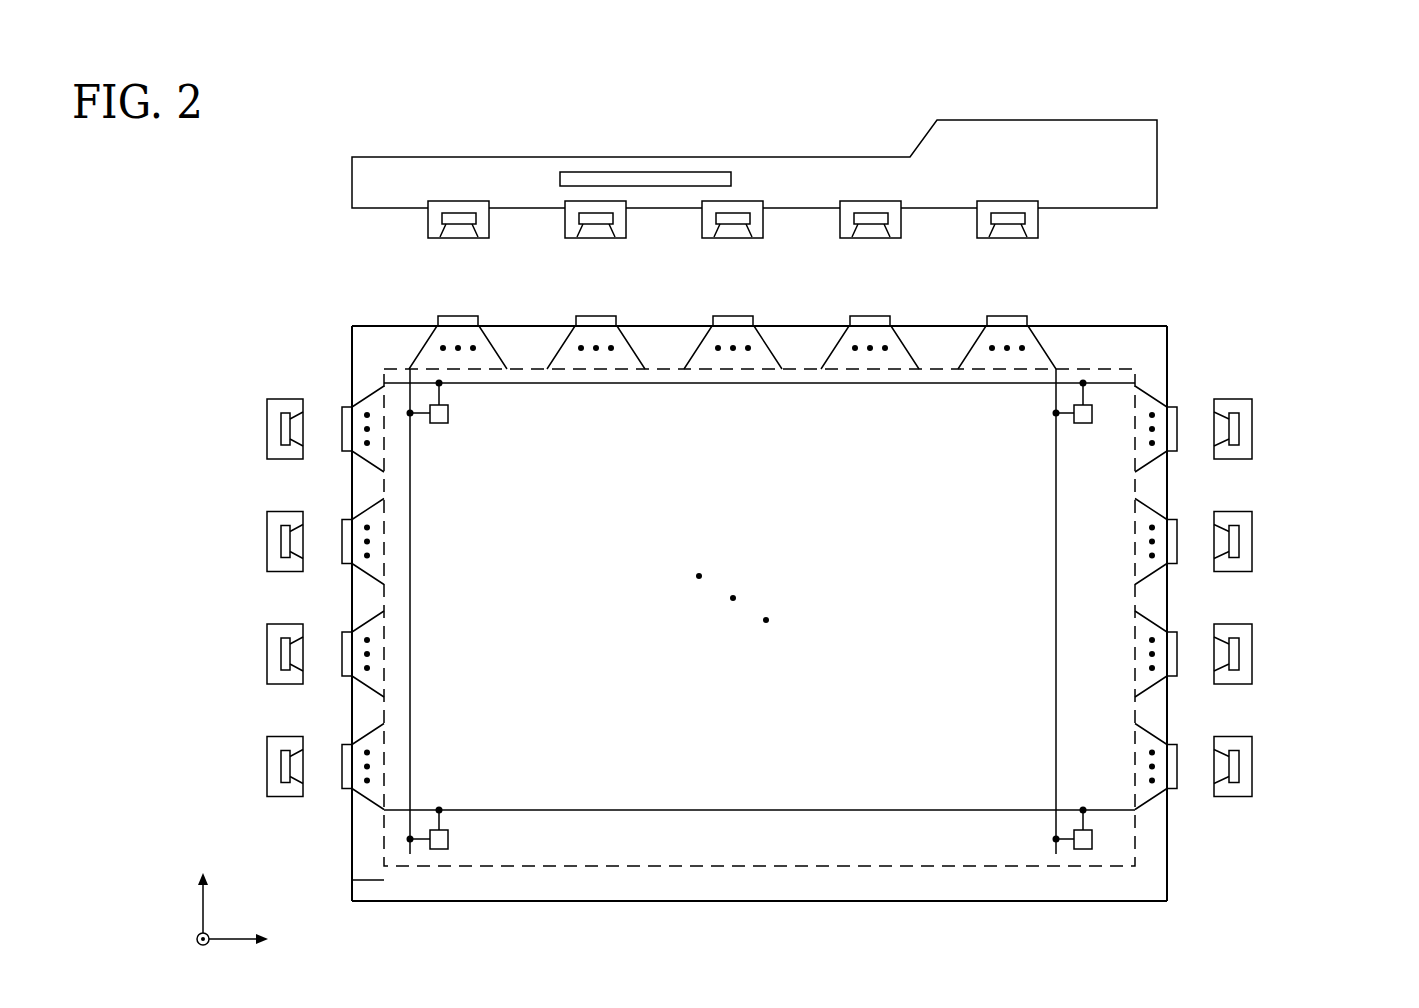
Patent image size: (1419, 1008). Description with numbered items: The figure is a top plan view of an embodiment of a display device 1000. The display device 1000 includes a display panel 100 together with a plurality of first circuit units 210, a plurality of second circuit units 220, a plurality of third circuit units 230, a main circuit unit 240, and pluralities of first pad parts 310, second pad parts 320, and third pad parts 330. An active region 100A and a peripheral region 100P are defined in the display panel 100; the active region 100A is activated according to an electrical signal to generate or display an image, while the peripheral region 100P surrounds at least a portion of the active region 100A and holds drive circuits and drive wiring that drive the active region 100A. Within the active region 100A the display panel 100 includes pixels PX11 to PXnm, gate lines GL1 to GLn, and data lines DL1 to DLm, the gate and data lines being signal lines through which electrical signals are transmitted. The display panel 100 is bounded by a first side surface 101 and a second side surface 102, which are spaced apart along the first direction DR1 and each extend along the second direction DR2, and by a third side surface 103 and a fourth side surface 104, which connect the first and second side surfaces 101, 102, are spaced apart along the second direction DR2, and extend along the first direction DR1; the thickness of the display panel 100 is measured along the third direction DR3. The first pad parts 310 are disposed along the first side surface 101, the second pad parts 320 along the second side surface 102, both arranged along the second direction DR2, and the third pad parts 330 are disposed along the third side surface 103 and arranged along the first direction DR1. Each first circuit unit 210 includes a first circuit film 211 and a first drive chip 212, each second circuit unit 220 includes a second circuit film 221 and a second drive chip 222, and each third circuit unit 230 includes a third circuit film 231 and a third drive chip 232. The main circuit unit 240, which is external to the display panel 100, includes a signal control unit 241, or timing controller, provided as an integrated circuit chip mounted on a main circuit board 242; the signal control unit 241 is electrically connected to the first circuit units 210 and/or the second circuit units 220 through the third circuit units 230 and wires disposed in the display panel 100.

The display device 1000 is at (1207, 123).
The display panel 100 is at (1167, 352).
The active region 100A is at (633, 866).
The peripheral region 100P is at (723, 883).
The first side surface 101 is at (1167, 833).
The second side surface 102 is at (352, 830).
The third side surface 103 is at (1077, 326).
The fourth side surface 104 is at (793, 901).
The first circuit unit 210 is at (1340, 395).
The first circuit film 211 is at (1252, 408).
The first drive chip 212 is at (1239, 428).
The second circuit unit 220 is at (180, 395).
The second circuit film 221 is at (267, 408).
The second drive chip 222 is at (281, 428).
The third circuit unit 230 is at (525, 95).
The third circuit film 231 is at (440, 201).
The third drive chip 232 is at (458, 213).
The main circuit unit 240 is at (788, 95).
The signal control unit 241 is at (678, 172).
The main circuit board 242 is at (747, 157).
The first pad part 310 is at (1175, 745).
The second pad part 320 is at (342, 745).
The third pad part 330 is at (868, 316).
The gate line GL1 is at (720, 383).
The gate line GLn is at (705, 810).
The data line DL1 is at (410, 610).
The data line DLm is at (1056, 610).
The pixel PX11 is at (448, 414).
The pixel PXnm is at (1092, 838).
The first direction DR1 is at (258, 939).
The second direction DR2 is at (203, 891).
The third direction DR3 is at (203, 954).